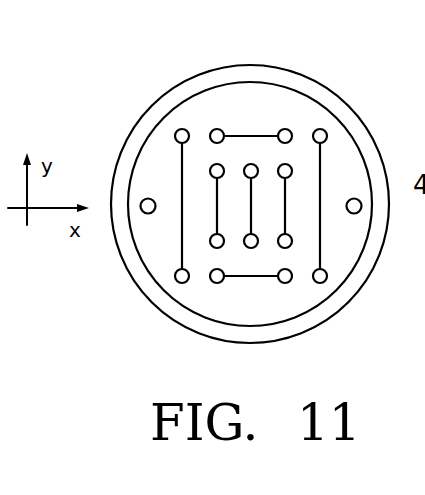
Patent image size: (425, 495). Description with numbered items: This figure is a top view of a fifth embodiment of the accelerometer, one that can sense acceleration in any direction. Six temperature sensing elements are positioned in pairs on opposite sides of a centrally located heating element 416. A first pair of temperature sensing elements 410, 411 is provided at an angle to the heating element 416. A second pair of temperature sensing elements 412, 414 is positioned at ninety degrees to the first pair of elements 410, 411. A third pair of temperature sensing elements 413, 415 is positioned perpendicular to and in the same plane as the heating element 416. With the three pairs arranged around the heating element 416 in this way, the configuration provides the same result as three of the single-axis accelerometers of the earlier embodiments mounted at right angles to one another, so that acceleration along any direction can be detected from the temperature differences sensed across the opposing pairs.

The temperature sensing element 410 is at (215, 205).
The temperature sensing element 411 is at (287, 193).
The temperature sensing element 412 is at (180, 262).
The temperature sensing element 413 is at (263, 276).
The temperature sensing element 414 is at (292, 242).
The temperature sensing element 415 is at (251, 135).
The heating element 416 is at (253, 212).